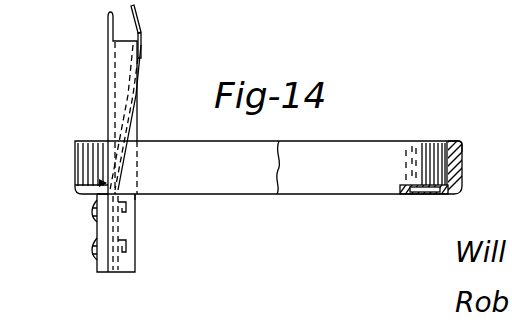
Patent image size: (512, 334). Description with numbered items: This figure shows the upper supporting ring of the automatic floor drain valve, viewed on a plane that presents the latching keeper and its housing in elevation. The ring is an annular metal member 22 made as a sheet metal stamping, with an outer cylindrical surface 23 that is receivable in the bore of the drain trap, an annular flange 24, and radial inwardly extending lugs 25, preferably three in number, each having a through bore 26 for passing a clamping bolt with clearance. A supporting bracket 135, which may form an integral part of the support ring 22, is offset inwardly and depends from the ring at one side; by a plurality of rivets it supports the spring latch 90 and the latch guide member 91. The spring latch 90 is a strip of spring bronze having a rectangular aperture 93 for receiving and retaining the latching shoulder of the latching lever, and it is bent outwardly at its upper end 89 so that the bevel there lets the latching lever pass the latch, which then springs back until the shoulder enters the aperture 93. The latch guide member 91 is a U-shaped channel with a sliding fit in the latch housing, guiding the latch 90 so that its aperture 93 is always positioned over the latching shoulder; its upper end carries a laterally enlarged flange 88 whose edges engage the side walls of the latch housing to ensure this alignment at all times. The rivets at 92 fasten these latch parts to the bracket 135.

The annular metal member 22 is at (343, 139).
The outer cylindrical surface 23 is at (462, 170).
The annular flange 24 is at (456, 142).
The radial inwardly extending lugs 25 is at (403, 187).
The through bore 26 is at (418, 194).
The laterally enlarged flange 88 is at (109, 32).
The upper end of spring latch 89 is at (143, 15).
The spring latch 90 is at (139, 76).
The latch guide member 91 is at (105, 92).
The inner brackets 92 is at (132, 240).
The rectangular aperture 93 is at (141, 52).
The supporting bracket 135 is at (97, 233).